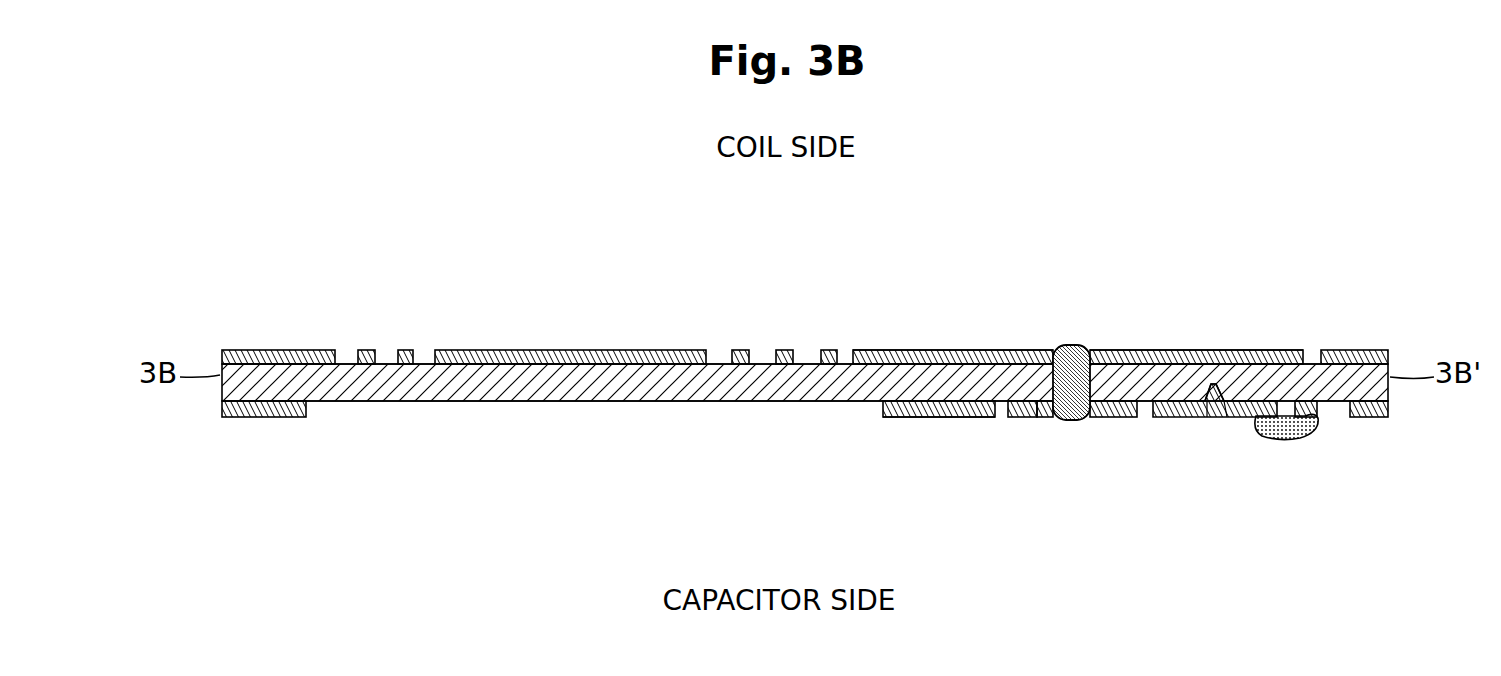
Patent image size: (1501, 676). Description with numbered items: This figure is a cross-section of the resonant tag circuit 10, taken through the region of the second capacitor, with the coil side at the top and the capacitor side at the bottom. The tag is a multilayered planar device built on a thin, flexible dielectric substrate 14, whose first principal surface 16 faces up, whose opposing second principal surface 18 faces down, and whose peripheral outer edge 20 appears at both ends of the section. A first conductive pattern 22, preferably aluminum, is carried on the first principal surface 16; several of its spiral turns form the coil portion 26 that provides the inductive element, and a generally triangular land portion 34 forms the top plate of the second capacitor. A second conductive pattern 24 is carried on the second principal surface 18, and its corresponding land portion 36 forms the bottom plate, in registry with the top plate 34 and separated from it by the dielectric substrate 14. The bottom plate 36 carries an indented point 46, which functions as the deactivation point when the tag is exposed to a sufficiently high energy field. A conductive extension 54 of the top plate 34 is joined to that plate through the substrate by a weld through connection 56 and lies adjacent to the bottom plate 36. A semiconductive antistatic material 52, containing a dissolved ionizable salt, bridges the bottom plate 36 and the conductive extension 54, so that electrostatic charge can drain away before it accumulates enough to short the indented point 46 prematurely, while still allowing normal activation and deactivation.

The resonant tag circuit 10 is at (222, 357).
The dielectric substrate 14 is at (528, 383).
The first principal surface 16 is at (718, 360).
The second principal surface 18 is at (625, 405).
The peripheral outer edge 20 is at (1388, 366).
The first conductive pattern 22 is at (992, 352).
The second conductive pattern 24 is at (887, 418).
The coil portion 26 is at (462, 350).
The land portion 34 is at (950, 352).
The land portion 36 is at (922, 420).
The indented point 46 is at (1213, 413).
The semiconductive antistatic material 52 is at (1290, 438).
The conductive extension 54 is at (1035, 418).
The weld through connection 56 is at (1090, 348).